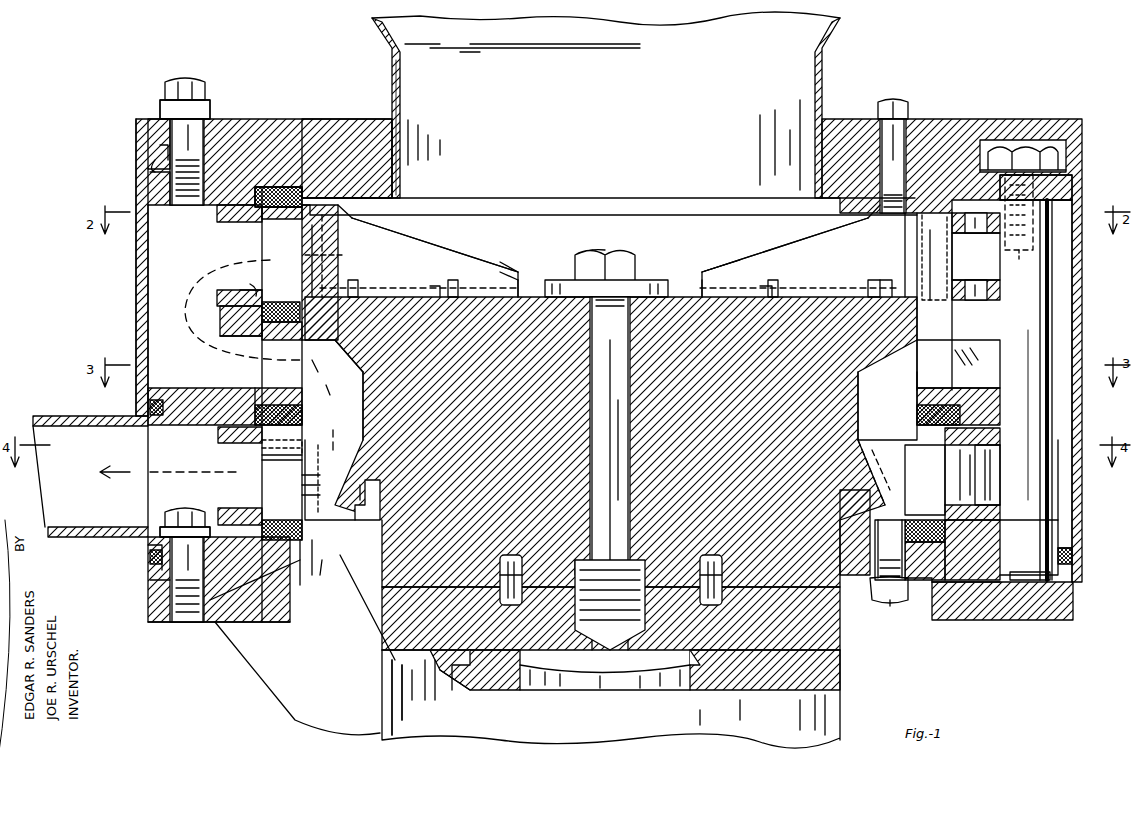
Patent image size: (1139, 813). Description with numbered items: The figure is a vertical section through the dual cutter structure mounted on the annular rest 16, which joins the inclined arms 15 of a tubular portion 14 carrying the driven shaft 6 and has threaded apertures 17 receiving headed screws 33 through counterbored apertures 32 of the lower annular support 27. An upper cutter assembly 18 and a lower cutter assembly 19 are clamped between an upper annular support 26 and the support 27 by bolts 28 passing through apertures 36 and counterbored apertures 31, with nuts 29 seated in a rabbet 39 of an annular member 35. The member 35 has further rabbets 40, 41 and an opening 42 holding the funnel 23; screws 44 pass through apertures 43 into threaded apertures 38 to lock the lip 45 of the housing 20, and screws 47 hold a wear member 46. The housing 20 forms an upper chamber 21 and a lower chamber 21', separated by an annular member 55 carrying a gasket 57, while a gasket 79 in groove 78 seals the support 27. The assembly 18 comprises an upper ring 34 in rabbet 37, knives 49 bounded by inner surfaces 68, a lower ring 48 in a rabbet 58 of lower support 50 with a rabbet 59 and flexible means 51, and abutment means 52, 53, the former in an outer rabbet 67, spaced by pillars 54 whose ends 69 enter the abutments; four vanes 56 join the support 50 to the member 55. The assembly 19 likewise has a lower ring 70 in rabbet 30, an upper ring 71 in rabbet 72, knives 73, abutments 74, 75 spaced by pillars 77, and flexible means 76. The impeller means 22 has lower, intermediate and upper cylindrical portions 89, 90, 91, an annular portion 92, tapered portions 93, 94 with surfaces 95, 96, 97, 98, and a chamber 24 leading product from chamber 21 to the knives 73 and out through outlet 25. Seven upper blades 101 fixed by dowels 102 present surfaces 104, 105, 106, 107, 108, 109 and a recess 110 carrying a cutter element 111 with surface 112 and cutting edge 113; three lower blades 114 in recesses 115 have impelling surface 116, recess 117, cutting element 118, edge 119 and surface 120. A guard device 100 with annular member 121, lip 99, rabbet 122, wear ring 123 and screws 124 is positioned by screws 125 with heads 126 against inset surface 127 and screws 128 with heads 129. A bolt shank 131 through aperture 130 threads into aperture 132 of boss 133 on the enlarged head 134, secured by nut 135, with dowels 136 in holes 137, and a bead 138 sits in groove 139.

The driven shaft 6 is at (608, 686).
The tubular portion 14 is at (832, 676).
The inclined arms 15 is at (340, 728).
The annular rest 16 is at (150, 608).
The threaded apertures 17 is at (160, 622).
The upper cutter assembly 18 is at (209, 254).
The lower cutter assembly 19 is at (210, 471).
The housing 20 is at (136, 262).
The upper annular chamber 21 is at (606, 391).
The lower annular chamber 21' is at (612, 476).
The impeller means 22 is at (650, 254).
The funnel 23 is at (822, 60).
The impeller chamber 24 is at (328, 377).
The outlet 25 is at (56, 414).
The upper annular support 26 is at (150, 184).
The lower annular support 27 is at (160, 590).
The bolts 28 is at (1054, 300).
The nuts 29 is at (1022, 140).
The inner rabbet 30 is at (222, 622).
The counterbored apertures 31 is at (1056, 554).
The counterbored apertures 32 is at (185, 565).
The headed screws 33 is at (170, 530).
The upper ring 34 is at (280, 187).
The annular member 35 is at (372, 130).
The apertures 36 is at (1060, 195).
The annular rabbet 37 is at (262, 187).
The threaded apertures 38 is at (168, 192).
The rabbet 39 is at (150, 138).
The rabbet 40 is at (290, 180).
The rabbet 41 is at (370, 206).
The opening 42 is at (398, 125).
The apertures 43 is at (160, 106).
The screws 44 is at (185, 82).
The inturned circumferential lip 45 is at (160, 152).
The annular wear member 46 is at (365, 222).
The screws 47 is at (896, 102).
The lower ring 48 is at (262, 332).
The knives 49 is at (258, 249).
The lower annular support 50 is at (222, 322).
The resiliently flexible means 51 is at (290, 300).
The annular abutment means 52 is at (218, 216).
The annular abutment means 53 is at (218, 298).
The spacer pillars 54 is at (988, 266).
The annular member 55 is at (190, 390).
The vane-like elements 56 is at (980, 366).
The gasket 57 is at (150, 406).
The rabbet 58 is at (260, 340).
The rabbet 59 is at (252, 290).
The outer rabbet 67 is at (260, 218).
The inner cylindrical surfaces 68 is at (294, 373).
The reduced cylindrical ends 69 is at (965, 228).
The lower ring 70 is at (265, 622).
The upper ring 71 is at (266, 400).
The rabbet 72 is at (292, 404).
The knives 73 is at (262, 462).
The annular abutment 74 is at (220, 438).
The annular abutment 75 is at (222, 510).
The resiliently flexible means 76 is at (280, 520).
The spacer pillars 77 is at (990, 486).
The circumferential groove 78 is at (150, 568).
The gasket 79 is at (150, 556).
The lower cylindrical portion 89 is at (856, 578).
The intermediate cylindrical portion 90 is at (375, 404).
The upper cylindrical portion 91 is at (318, 298).
The annular portion 92 is at (332, 256).
The tapered portion 93 is at (345, 356).
The tapered portion 94 is at (330, 480).
The inclined annular surface 95 is at (344, 437).
The bottom annular surface 96 is at (316, 505).
The vertical annular surface 97 is at (312, 495).
The upper surface 98 is at (310, 485).
The upstanding lip 99 is at (370, 520).
The guard device 100 is at (345, 580).
The upper blades 101 is at (436, 238).
The dowels 102 is at (610, 288).
The large surface 104 is at (472, 260).
The lower surface 105 is at (468, 296).
The upper horizontal surface 106 is at (360, 225).
The inner end surface 107 is at (522, 290).
The inclined surface 108 is at (496, 266).
The outer vertical portion 109 is at (332, 246).
The vertical recess 110 is at (904, 264).
The cutter element 111 is at (936, 265).
The impelling receiving surface 112 is at (905, 290).
The cutting edge 113 is at (918, 246).
The lower blades 114 is at (886, 434).
The vertical recesses 115 is at (864, 410).
The impelling surface 116 is at (888, 450).
The vertical recess 117 is at (918, 500).
The cutting element 118 is at (282, 442).
The cutting edge 119 is at (912, 466).
The impelling surface 120 is at (910, 452).
The annular member 121 is at (906, 600).
The annular rabbet 122 is at (866, 520).
The wear ring 123 is at (878, 576).
The screws 124 is at (894, 606).
The screws 125 is at (308, 580).
The heads 126 is at (302, 610).
The inset surface 127 is at (330, 600).
The screws 128 is at (960, 558).
The heads 129 is at (948, 586).
The axially extending aperture 130 is at (595, 522).
The bolt shank 131 is at (610, 473).
The threaded aperture 132 is at (610, 598).
The boss 133 is at (582, 560).
The enlarged head 134 is at (826, 632).
The nut 135 is at (580, 258).
The dowels 136 is at (500, 570).
The holes 137 is at (504, 556).
The circumferential bead 138 is at (452, 670).
The annular groove 139 is at (466, 680).